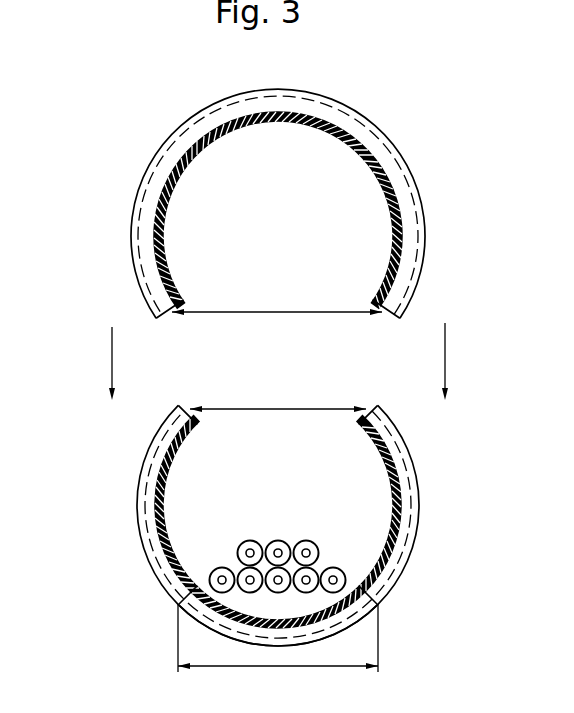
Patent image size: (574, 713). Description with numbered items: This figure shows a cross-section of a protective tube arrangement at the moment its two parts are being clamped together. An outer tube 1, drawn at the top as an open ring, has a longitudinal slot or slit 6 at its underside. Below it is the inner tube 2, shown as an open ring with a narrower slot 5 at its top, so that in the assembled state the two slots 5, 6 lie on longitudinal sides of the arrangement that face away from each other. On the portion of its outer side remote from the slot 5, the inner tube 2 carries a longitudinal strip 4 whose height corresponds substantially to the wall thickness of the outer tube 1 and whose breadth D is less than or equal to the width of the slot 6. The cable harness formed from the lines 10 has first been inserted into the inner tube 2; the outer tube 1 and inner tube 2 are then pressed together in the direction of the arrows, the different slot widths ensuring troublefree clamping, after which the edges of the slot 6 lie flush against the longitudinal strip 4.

The outer tube 1 is at (133, 174).
The inner tube 2 is at (130, 502).
The longitudinal strip 4 is at (362, 598).
The slot 5 is at (277, 408).
The longitudinal slot 6 is at (275, 313).
The lines 10 is at (281, 576).
The breadth D is at (272, 667).